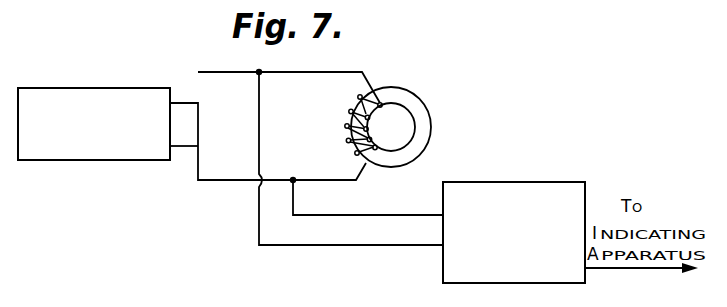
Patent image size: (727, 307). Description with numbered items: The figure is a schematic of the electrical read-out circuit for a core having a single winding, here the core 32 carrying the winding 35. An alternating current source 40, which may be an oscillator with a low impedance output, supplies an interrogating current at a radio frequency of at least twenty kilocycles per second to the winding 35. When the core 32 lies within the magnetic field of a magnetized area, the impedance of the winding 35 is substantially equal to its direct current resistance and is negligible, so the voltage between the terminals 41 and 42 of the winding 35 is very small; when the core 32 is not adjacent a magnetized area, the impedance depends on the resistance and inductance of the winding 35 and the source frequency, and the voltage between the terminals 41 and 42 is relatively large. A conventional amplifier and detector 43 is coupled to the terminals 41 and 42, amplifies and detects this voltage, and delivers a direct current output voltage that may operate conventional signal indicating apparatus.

The alternating current source 40 is at (113, 97).
The terminal 41 is at (262, 75).
The terminal 42 is at (293, 178).
The core 32 is at (405, 99).
The winding 35 is at (346, 126).
The amplifier and detector 43 is at (500, 181).